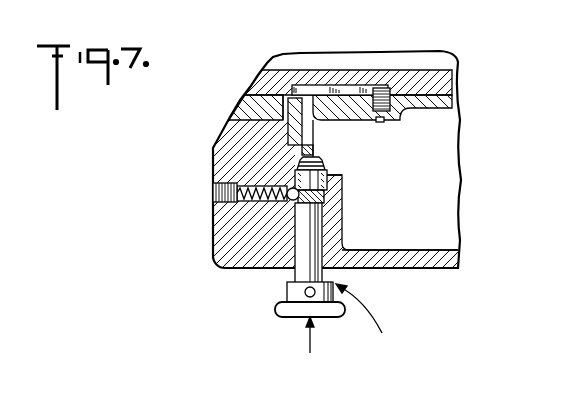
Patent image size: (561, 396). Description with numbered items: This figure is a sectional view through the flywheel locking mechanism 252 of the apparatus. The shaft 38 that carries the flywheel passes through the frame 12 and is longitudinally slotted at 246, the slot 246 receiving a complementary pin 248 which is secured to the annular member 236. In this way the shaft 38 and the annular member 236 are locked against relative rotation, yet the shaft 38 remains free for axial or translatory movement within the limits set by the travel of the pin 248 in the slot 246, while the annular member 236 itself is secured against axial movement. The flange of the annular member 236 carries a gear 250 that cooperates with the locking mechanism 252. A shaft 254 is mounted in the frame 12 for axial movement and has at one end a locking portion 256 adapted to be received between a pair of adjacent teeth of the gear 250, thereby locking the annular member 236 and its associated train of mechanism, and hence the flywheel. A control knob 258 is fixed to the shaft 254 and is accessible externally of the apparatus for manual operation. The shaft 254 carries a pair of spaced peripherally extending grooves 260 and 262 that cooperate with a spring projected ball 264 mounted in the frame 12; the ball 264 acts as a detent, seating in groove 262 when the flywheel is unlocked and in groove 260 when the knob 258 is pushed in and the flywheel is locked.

The frame 12 is at (237, 244).
The shaft 38 is at (442, 83).
The annular member 236 is at (447, 110).
The slot 246 is at (328, 85).
The pin 248 is at (384, 90).
The gear 250 is at (315, 153).
The locking portion 256 is at (325, 163).
The groove 262 is at (318, 195).
The groove 260 is at (327, 207).
The shaft 254 is at (313, 238).
The control knob 258 is at (282, 309).
The flywheel locking mechanism 252 is at (376, 312).
The spring projected ball 264 is at (290, 204).